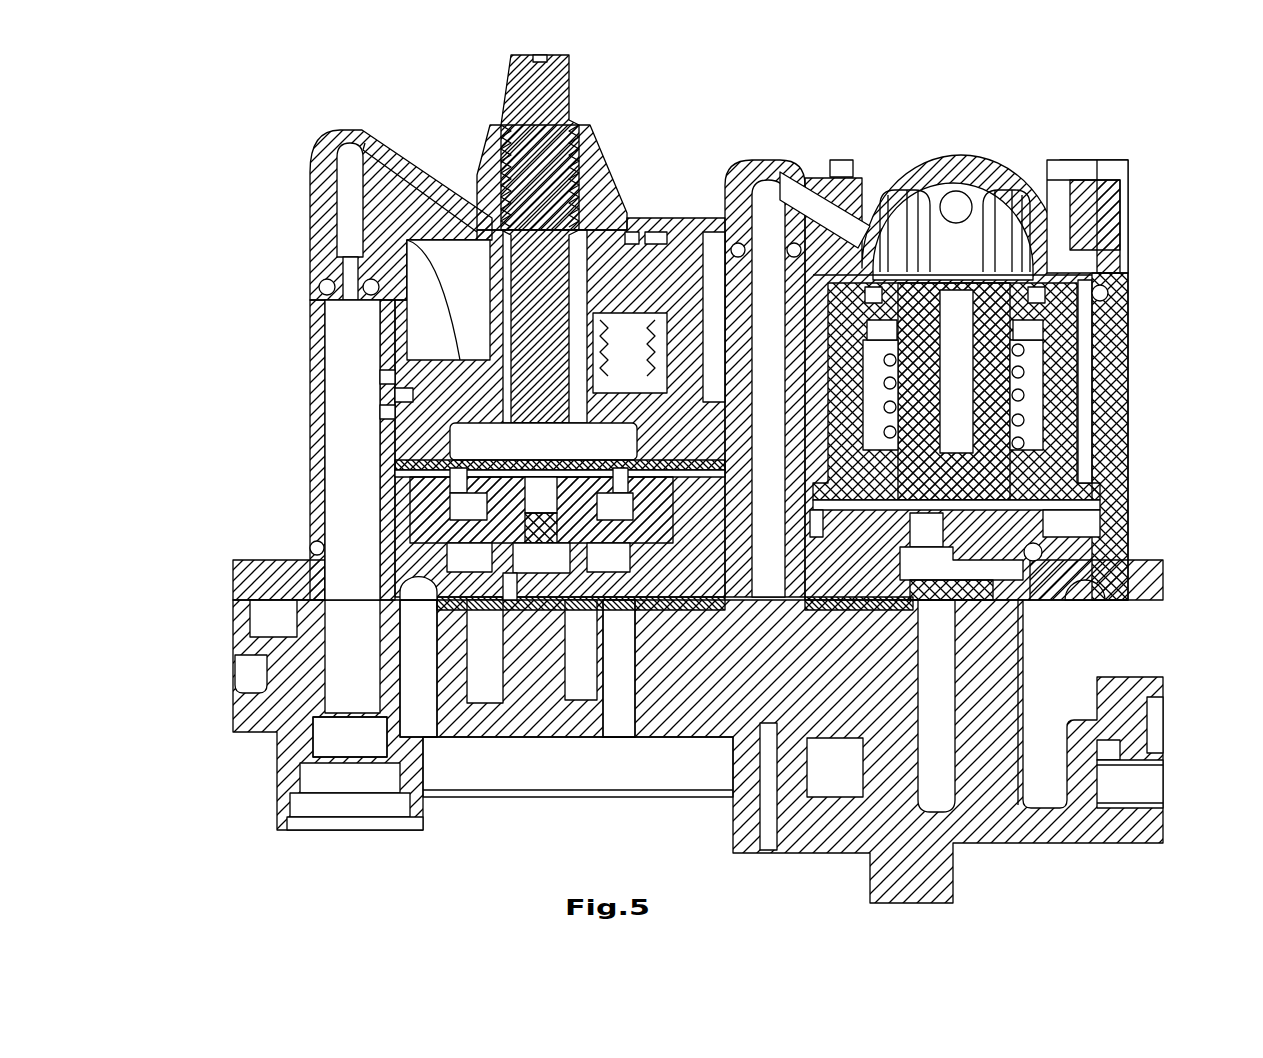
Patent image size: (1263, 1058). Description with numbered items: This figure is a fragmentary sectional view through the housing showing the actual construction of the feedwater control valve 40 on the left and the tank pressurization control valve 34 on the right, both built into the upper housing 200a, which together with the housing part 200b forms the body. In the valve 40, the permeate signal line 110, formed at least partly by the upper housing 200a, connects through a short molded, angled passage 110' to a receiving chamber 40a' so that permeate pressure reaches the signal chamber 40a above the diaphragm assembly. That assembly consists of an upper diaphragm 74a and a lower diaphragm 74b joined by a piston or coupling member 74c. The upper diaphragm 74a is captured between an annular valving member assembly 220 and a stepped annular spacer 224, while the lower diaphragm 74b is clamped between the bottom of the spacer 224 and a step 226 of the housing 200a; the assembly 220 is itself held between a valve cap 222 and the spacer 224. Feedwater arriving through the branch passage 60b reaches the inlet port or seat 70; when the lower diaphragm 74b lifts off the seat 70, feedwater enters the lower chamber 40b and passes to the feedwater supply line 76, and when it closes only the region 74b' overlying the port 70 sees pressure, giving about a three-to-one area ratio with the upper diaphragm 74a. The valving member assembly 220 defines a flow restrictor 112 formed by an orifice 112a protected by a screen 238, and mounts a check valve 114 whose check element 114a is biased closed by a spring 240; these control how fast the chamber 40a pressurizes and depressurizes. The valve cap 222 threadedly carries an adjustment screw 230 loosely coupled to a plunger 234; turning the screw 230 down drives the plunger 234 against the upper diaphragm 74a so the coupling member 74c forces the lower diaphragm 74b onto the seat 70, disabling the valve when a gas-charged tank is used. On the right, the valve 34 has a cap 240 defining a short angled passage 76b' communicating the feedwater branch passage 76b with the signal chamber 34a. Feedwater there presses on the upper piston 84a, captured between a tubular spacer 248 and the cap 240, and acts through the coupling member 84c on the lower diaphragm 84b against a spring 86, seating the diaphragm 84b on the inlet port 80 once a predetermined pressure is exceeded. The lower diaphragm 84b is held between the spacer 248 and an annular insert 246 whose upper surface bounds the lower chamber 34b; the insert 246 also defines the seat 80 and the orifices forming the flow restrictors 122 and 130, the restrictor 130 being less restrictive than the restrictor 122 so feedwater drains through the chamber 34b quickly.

The tank pressurization control valve 34 is at (1138, 146).
The signal chamber 34a is at (988, 200).
The lower fluid chamber 34b is at (1128, 462).
The feedwater control valve 40 is at (350, 112).
The signal chamber 40a is at (746, 354).
The receiving chamber 40a' is at (448, 300).
The lower chamber 40b is at (305, 578).
The branch passage 60b is at (470, 665).
The inlet port 70 is at (515, 670).
The upper diaphragm 74a is at (500, 447).
The lower diaphragm 74b is at (389, 775).
The exposed diaphragm region 74b' is at (548, 705).
The piston/coupling member 74c is at (405, 470).
The feedwater supply line 76 is at (640, 660).
The feedwater branch passage 76b is at (765, 378).
The passage 76b' is at (825, 167).
The inlet port 80 is at (932, 600).
The upper piston 84a is at (1100, 230).
The lower diaphragm 84b is at (1130, 420).
The coupling member 84c is at (1115, 382).
The spring 86 is at (1023, 370).
The permeate signal line 110 is at (295, 450).
The angled passage 110' is at (401, 190).
The flow restrictor 112 is at (372, 378).
The orifice 112a is at (362, 413).
The check valve 114 is at (660, 232).
The check element 114a is at (633, 228).
The flow restrictor 122 is at (1100, 505).
The flow restrictor 130 is at (1100, 530).
The upper housing 200a is at (258, 590).
The base portion 200b is at (243, 735).
The annular valving member assembly 220 is at (400, 396).
The valve cap 222 is at (440, 205).
The stepped annular spacer 224 is at (355, 547).
The step 226 is at (673, 527).
The adjustment screw 230 is at (560, 76).
The plunger 234 is at (583, 140).
The screen 238 is at (320, 303).
The cap 240 is at (605, 333).
The annular insert 246 is at (935, 585).
The tubular spacer 248 is at (1120, 300).